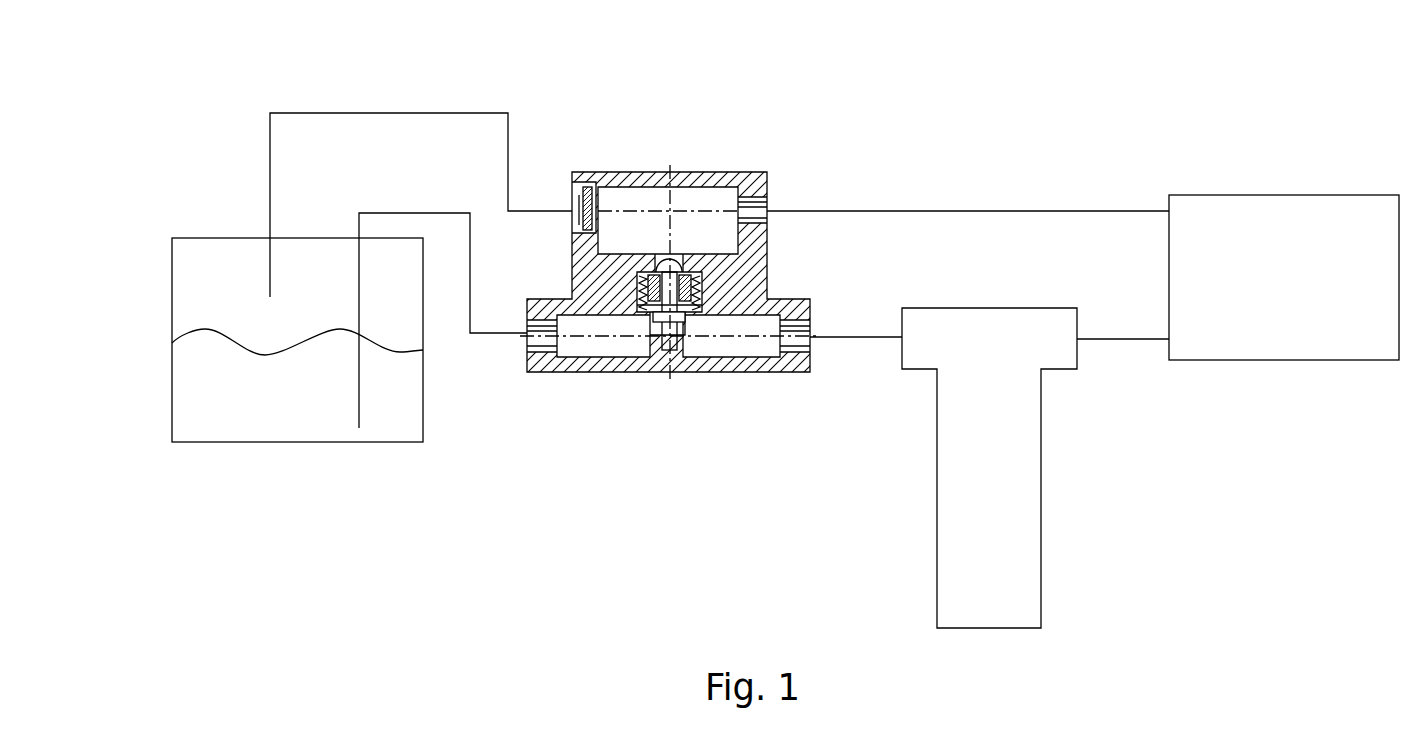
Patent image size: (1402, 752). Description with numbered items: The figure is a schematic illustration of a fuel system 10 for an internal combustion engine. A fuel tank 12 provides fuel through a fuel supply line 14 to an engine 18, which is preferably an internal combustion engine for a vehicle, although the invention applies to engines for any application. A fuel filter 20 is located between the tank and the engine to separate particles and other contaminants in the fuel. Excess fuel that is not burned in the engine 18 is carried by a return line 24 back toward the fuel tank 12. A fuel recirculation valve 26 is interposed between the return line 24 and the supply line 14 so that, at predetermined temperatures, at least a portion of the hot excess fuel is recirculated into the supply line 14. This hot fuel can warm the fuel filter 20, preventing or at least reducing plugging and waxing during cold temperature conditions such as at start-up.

The fuel system 10 is at (848, 65).
The fuel tank 12 is at (413, 433).
The fuel supply line 14 is at (492, 334).
The engine 18 is at (1263, 360).
The fuel filter 20 is at (1002, 621).
The return line 24 is at (978, 211).
The fuel recirculation valve 26 is at (698, 410).